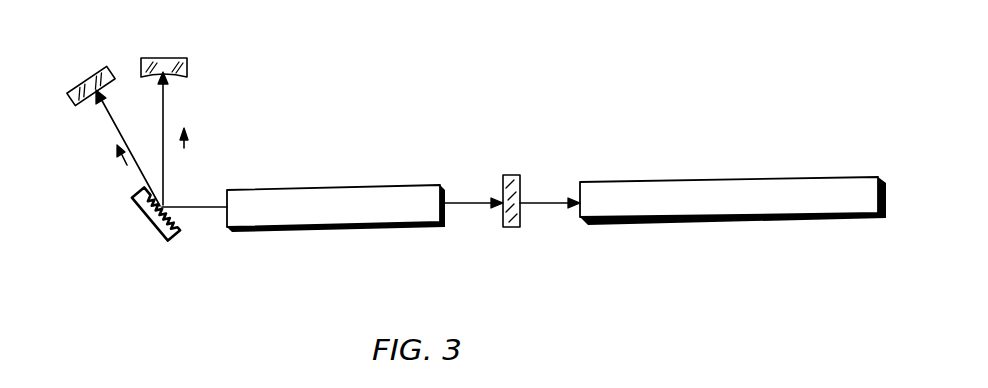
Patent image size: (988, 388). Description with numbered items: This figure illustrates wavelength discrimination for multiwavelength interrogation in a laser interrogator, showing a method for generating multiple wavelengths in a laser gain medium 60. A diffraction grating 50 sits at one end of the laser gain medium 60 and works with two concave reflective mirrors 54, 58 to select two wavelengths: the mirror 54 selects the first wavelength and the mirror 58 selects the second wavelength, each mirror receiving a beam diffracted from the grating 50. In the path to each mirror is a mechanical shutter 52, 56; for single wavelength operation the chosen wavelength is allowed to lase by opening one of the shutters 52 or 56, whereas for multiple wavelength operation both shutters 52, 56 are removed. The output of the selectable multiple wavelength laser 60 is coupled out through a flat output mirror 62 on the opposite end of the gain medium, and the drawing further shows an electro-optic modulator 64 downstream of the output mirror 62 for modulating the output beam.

The diffraction grating 50 is at (138, 213).
The mechanical shutter 52 is at (153, 113).
The concave reflective mirror 54 is at (187, 67).
The mechanical shutter 56 is at (126, 126).
The concave reflective mirror 58 is at (72, 104).
The laser gain medium 60 is at (308, 188).
The flat output mirror 62 is at (517, 175).
The electro-optic modulator 64 is at (688, 178).